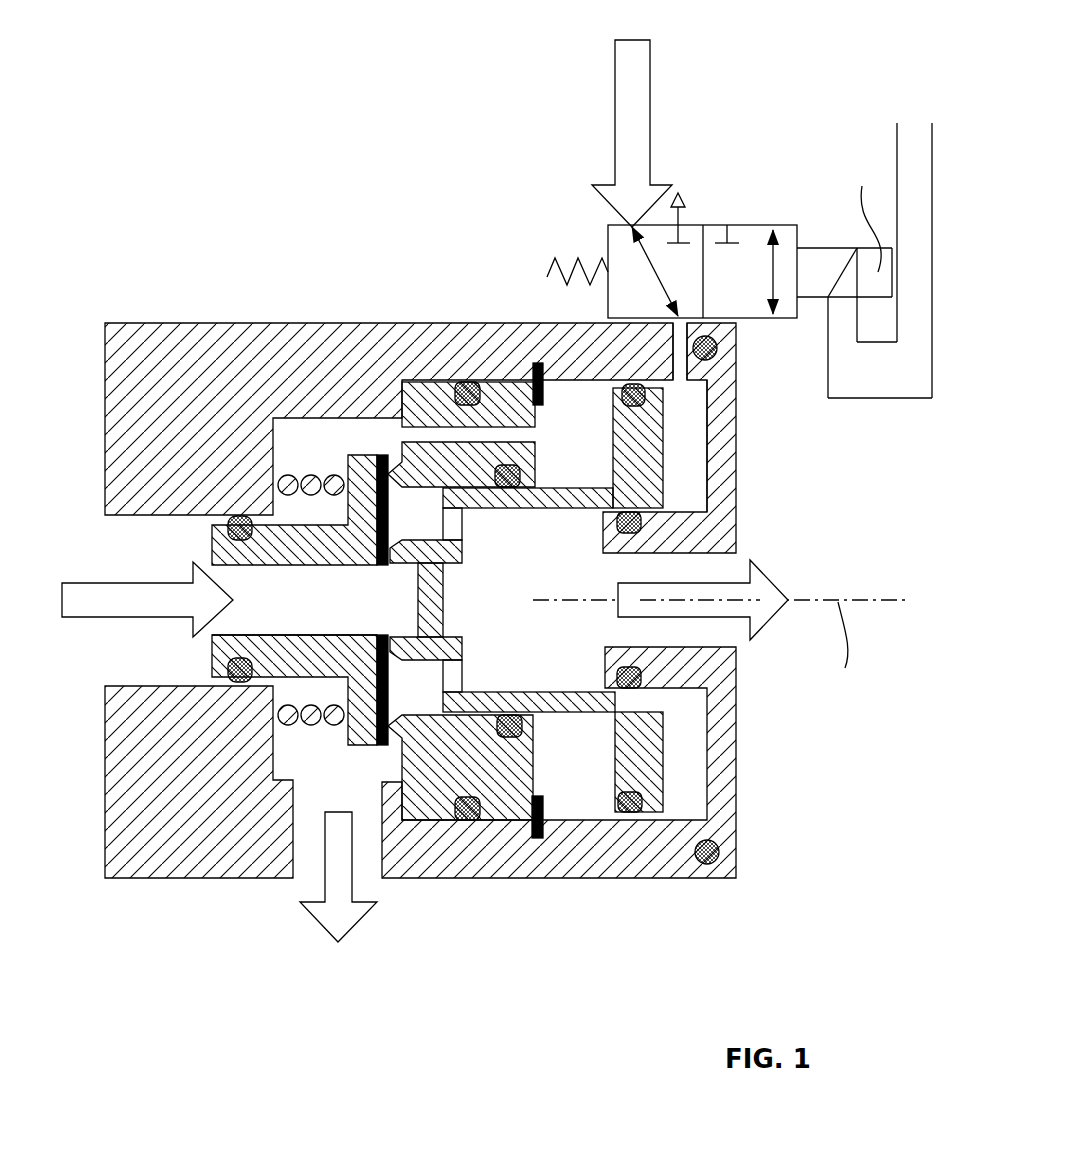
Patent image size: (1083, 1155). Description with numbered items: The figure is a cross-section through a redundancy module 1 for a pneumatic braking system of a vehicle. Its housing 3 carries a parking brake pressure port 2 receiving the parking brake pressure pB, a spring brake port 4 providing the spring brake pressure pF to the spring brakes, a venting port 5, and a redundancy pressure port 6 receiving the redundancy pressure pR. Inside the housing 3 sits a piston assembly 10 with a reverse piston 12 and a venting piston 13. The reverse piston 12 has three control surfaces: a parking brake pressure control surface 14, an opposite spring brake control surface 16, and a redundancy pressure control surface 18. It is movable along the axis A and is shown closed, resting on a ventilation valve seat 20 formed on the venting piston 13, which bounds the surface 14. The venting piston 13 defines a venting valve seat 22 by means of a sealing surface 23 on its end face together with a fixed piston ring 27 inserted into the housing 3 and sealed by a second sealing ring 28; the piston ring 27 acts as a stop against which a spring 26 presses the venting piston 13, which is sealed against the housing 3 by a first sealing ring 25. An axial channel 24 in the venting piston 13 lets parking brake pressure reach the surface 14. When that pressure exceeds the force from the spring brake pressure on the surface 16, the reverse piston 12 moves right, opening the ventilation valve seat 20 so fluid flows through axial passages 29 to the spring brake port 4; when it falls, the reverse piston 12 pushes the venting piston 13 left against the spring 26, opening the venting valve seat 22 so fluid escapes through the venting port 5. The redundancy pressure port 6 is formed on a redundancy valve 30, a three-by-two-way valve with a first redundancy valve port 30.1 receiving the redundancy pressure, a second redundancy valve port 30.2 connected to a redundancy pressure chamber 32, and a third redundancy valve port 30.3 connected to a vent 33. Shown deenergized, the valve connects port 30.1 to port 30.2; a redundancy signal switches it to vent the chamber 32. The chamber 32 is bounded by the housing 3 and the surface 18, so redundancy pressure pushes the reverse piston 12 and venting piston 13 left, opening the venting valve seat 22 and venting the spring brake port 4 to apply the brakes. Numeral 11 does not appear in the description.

The redundancy module 1 is at (186, 186).
The parking brake pressure port 2 is at (97, 550).
The housing 3 is at (143, 322).
The spring brake port 4 is at (774, 568).
The venting port 5 is at (367, 857).
The redundancy pressure port 6 is at (578, 133).
The first redundancy valve port 30.1 is at (632, 224).
The piston assembly 10 is at (358, 296).
The pilot control valve unit 11 is at (430, 178).
The reverse piston 12 is at (573, 712).
The venting piston 13 is at (215, 662).
The parking brake pressure control surface 14 is at (420, 617).
The spring brake control surface 16 is at (443, 622).
The redundancy pressure control surface 18 is at (665, 462).
The ventilation valve seat 20 is at (390, 563).
The venting valve seat 22 is at (390, 745).
The sealing surface 23 is at (390, 706).
The axial channel 24 is at (240, 627).
The first sealing ring 25 is at (230, 520).
The spring 26 is at (300, 470).
The piston ring 27 is at (420, 380).
The second sealing ring 28 is at (470, 384).
The axial passages 29 is at (450, 528).
The redundancy valve 30 is at (608, 237).
The second redundancy valve port 30.2 is at (705, 362).
The third redundancy valve port 30.3 is at (683, 224).
The redundancy pressure chamber 32 is at (690, 425).
The vent 33 is at (680, 195).